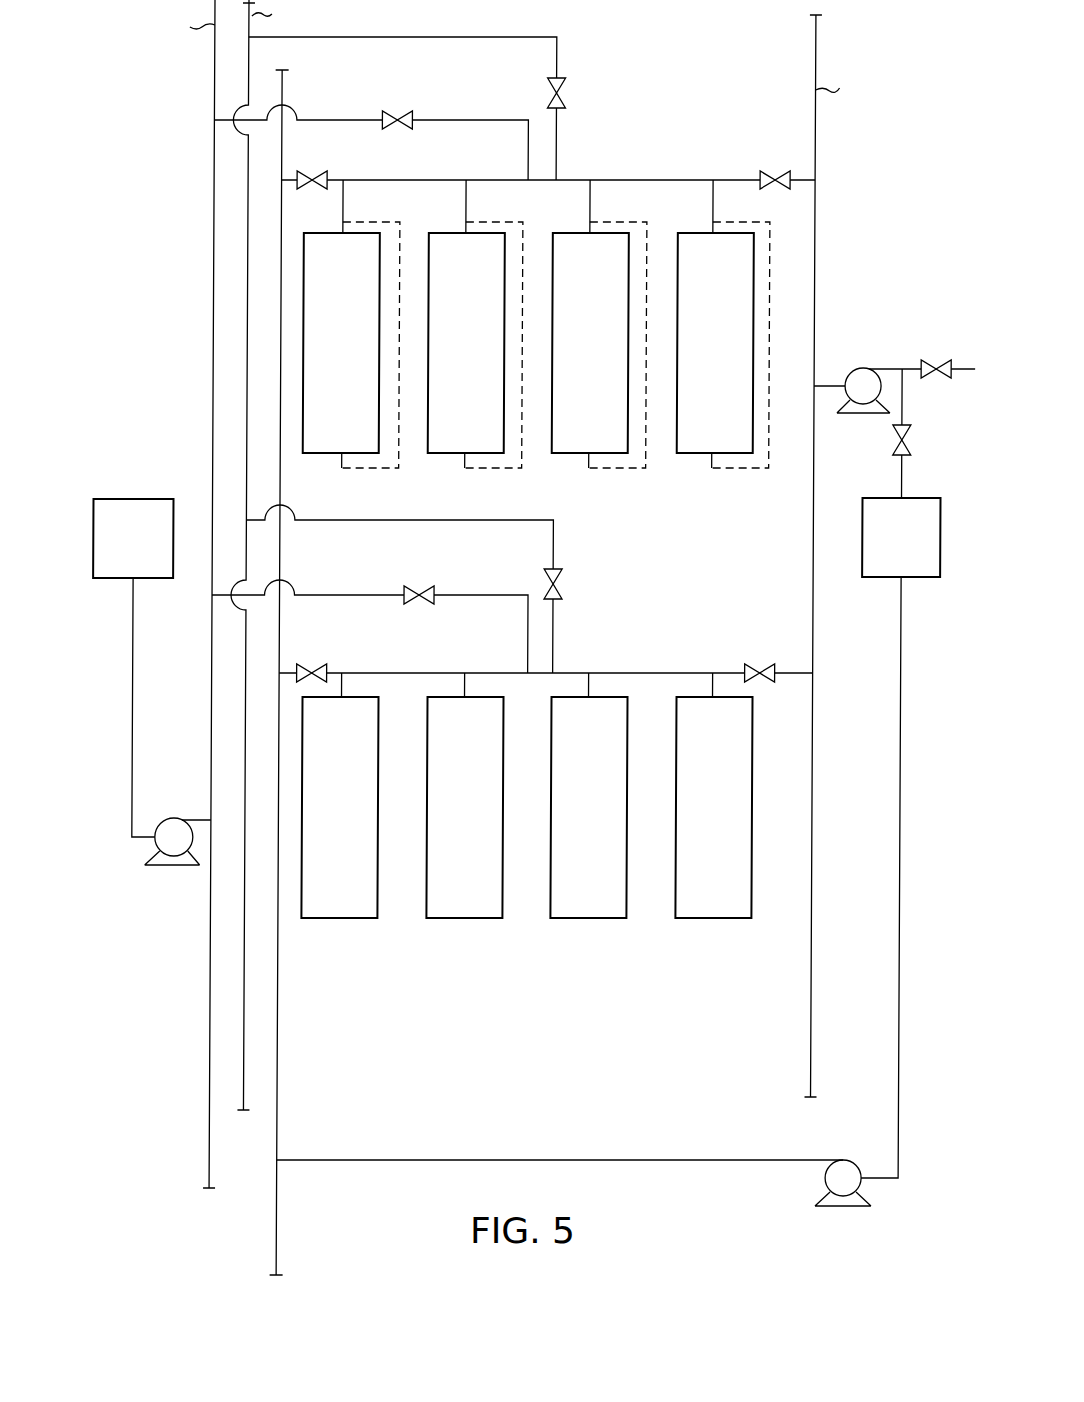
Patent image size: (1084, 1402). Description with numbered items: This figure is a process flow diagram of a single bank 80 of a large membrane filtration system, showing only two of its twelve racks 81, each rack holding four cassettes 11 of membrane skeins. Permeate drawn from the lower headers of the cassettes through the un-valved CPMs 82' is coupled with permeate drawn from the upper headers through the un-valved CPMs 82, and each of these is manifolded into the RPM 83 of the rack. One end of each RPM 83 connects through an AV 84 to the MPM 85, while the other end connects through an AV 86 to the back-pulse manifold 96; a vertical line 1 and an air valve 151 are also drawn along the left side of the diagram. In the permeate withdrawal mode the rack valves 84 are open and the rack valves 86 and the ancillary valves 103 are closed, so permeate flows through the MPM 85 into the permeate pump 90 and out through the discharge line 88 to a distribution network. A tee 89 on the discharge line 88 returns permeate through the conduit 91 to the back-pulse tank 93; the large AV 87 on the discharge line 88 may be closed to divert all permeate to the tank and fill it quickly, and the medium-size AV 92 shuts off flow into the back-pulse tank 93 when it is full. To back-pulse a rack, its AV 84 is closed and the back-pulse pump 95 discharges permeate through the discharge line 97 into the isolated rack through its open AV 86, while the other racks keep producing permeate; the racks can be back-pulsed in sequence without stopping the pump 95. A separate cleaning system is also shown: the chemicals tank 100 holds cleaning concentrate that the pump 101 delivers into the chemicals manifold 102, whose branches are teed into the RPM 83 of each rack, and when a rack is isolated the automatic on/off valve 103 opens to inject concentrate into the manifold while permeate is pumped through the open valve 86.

The feed line 1 is at (250, 222).
The cassette 11 is at (726, 355).
The bank 80 is at (531, 637).
The rack 81 is at (546, 574).
The un-valved CPM 82 is at (527, 444).
The un-valved CPM 82' is at (556, 345).
The RPM 83 is at (650, 180).
The AV 84 is at (772, 171).
The MPM 85 is at (816, 495).
The AV 86 is at (318, 171).
The AV 87 is at (928, 360).
The discharge line 88 is at (967, 372).
The tee 89 is at (902, 368).
The permeate pump 90 is at (843, 415).
The conduit 91 is at (904, 487).
The AV 92 is at (910, 443).
The back-pulse tank 93 is at (890, 557).
The back-pulse pump 95 is at (831, 1180).
The back-pulse manifold 96 is at (282, 1100).
The discharge line 97 is at (595, 1160).
The chemicals tank 100 is at (130, 499).
The pump 101 is at (163, 870).
The chemicals manifold 102 is at (215, 250).
The automatic on/off valve 103 is at (398, 111).
The air valve 151 is at (565, 98).